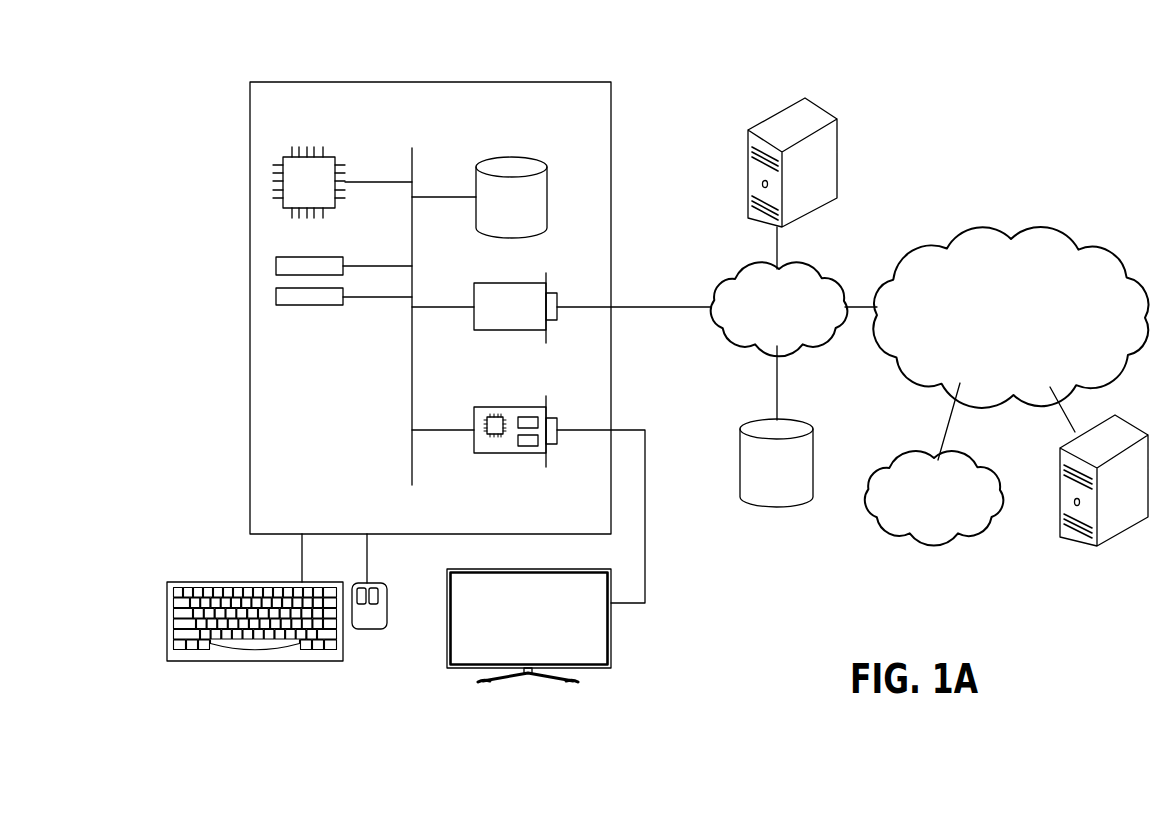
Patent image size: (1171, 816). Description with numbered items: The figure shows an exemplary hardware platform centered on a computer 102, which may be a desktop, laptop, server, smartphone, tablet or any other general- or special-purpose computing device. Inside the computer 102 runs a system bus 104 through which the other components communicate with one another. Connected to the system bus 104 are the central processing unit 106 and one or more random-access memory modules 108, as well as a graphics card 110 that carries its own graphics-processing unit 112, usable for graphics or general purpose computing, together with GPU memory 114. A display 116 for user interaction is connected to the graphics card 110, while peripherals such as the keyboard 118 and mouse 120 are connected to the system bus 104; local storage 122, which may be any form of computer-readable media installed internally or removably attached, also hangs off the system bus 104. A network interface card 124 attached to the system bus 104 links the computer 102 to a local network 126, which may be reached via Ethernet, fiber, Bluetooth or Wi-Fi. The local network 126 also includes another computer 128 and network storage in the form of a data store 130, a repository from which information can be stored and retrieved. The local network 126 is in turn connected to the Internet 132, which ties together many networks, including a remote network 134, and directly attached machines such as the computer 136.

The computer 102 is at (430, 278).
The system bus 104 is at (430, 297).
The central processing unit 106 is at (342, 158).
The random-access memory modules 108 is at (344, 260).
The graphics card 110 is at (528, 485).
The graphics-processing unit 112 is at (473, 450).
The GPU memory 114 is at (548, 455).
The display 116 is at (562, 625).
The keyboard 118 is at (255, 626).
The mouse 120 is at (376, 610).
The local storage 122 is at (497, 188).
The network interface card 124 is at (561, 293).
The local network 126 is at (794, 323).
The computer 128 is at (808, 148).
The data store 130 is at (793, 444).
The Internet 132 is at (1010, 330).
The remote network 134 is at (944, 482).
The computer 136 is at (1115, 464).